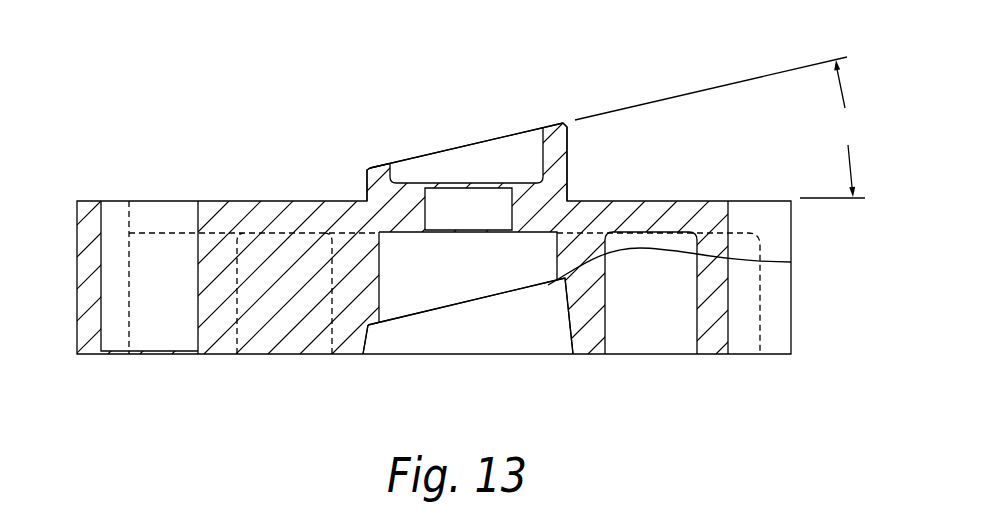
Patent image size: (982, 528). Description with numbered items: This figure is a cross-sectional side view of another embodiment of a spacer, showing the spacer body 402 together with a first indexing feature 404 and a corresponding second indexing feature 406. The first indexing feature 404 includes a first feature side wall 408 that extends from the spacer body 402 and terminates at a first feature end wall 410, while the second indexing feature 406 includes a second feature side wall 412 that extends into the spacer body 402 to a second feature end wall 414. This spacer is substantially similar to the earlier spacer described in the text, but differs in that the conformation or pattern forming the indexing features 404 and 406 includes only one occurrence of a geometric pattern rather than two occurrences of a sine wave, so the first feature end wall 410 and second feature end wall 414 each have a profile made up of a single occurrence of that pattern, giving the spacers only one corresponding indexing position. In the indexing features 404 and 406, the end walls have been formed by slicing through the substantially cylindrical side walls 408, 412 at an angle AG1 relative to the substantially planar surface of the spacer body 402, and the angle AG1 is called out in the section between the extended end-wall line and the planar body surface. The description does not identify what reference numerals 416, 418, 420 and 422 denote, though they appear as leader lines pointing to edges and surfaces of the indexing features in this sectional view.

The spacer body 402 is at (58, 310).
The first indexing feature 404 is at (348, 154).
The second indexing feature 406 is at (473, 332).
The first feature side wall 408 is at (366, 185).
The first feature end wall 410 is at (483, 140).
The second feature side wall 412 is at (550, 328).
The second feature end wall 414 is at (485, 307).
The upper wedge end face 416 is at (553, 124).
The reference plane line 418 is at (791, 262).
The upper pocket corner 420 is at (383, 167).
The lower wedge left end face 422 is at (368, 327).
The angle AG1 is at (720, 127).